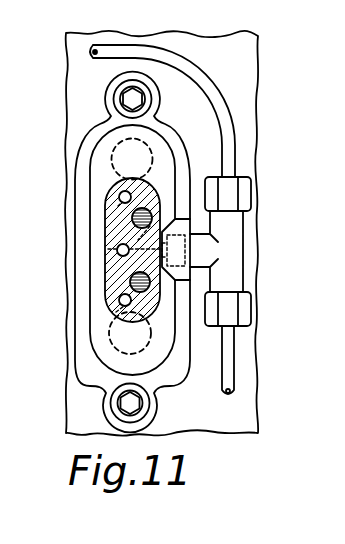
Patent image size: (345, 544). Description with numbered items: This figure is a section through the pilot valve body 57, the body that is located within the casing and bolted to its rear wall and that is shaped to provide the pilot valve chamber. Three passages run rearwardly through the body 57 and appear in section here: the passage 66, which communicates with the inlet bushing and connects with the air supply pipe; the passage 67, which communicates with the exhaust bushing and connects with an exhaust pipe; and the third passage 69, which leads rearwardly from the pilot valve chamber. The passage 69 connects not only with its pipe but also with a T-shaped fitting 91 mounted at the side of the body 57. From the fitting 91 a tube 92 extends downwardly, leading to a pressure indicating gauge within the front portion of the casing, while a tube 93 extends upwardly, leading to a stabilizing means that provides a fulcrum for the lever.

The valve body 57 is at (100, 157).
The passage 66 is at (120, 299).
The passage 67 is at (120, 195).
The third passage 69 is at (118, 249).
The T-shaped fitting 91 is at (233, 252).
The tube 92 is at (227, 360).
The tube 93 is at (230, 137).